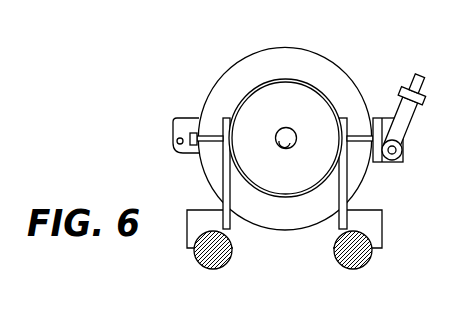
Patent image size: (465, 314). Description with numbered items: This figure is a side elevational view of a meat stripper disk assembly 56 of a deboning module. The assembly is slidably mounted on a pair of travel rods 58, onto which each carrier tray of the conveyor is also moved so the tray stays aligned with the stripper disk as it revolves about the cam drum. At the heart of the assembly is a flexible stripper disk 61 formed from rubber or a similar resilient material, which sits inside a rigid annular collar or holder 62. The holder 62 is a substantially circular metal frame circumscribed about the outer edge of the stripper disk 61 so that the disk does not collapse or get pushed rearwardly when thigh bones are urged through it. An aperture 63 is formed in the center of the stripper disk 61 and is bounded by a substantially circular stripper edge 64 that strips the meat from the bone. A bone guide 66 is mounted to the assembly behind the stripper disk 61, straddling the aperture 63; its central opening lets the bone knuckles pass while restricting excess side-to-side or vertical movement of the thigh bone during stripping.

The meat stripper disk assembly 56 is at (245, 42).
The travel rods 58 is at (194, 255).
The stripper disk 61 is at (262, 117).
The holder 62 is at (320, 70).
The aperture 63 is at (290, 130).
The stripper edge 64 is at (286, 148).
The bone guide 66 is at (222, 178).